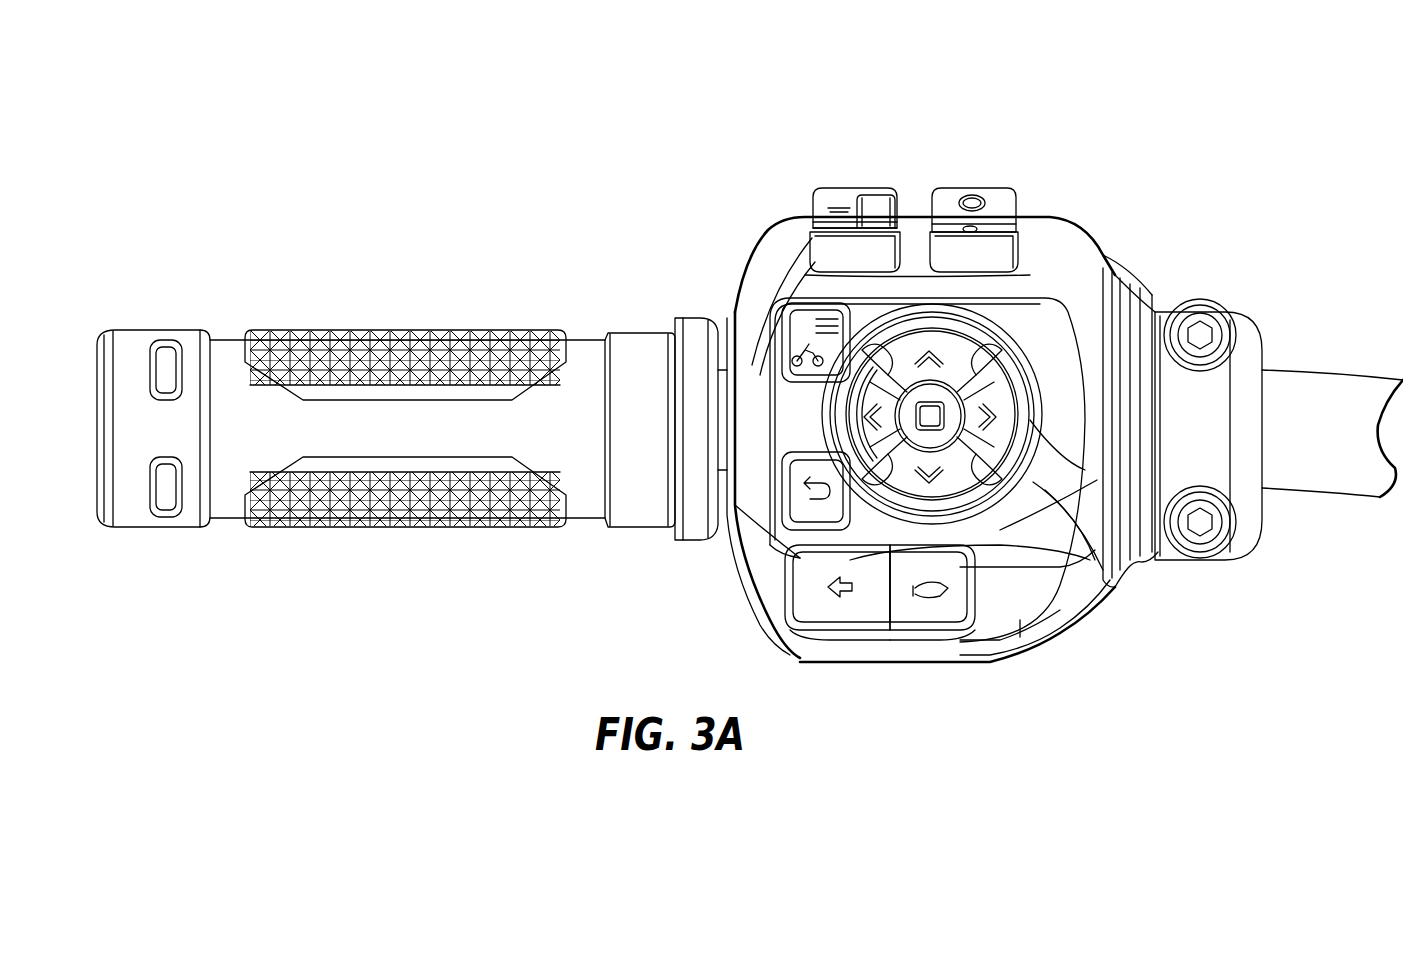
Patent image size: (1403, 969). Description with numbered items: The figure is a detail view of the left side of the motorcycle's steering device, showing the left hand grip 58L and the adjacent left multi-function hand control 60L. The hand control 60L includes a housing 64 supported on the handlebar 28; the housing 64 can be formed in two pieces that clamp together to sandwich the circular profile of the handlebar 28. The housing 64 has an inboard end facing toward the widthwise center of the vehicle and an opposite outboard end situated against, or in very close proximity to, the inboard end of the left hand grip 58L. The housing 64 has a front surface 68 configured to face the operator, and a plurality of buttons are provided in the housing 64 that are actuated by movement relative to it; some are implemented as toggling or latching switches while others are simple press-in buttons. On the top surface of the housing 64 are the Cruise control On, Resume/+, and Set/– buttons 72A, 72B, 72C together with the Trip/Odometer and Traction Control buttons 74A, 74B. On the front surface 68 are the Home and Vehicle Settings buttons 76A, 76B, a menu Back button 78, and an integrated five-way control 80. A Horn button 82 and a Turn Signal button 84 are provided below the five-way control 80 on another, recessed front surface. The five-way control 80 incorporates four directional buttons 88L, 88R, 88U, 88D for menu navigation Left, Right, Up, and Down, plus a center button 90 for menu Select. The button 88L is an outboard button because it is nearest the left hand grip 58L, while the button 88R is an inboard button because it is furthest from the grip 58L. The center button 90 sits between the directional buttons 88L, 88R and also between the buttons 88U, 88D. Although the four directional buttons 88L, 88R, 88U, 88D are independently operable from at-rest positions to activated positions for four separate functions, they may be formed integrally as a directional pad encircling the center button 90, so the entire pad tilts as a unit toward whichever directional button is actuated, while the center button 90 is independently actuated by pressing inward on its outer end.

The handlebar 28 is at (1312, 392).
The left hand grip 58L is at (290, 527).
The left multi-function hand control 60L is at (1080, 118).
The housing 64 is at (1058, 242).
The front surface 68 is at (1035, 485).
The Cruise control On button 72A is at (878, 204).
The Resume/+ button 72B is at (848, 186).
The Set/– button 72C is at (833, 226).
The Trip/Odometer button 74A is at (972, 198).
The Traction Control button 74B is at (982, 228).
The Home button 76A is at (818, 323).
The Vehicle Settings button 76B is at (803, 351).
The menu Back button 78 is at (795, 480).
The integrated 5-way control 80 is at (1030, 348).
The Horn button 82 is at (925, 605).
The Turn Signal button 84 is at (820, 605).
The directional button Up 88U is at (916, 350).
The directional button Down 88D is at (904, 490).
The directional button Left 88L is at (868, 437).
The directional button Right 88R is at (1003, 430).
The center button 90 is at (934, 442).